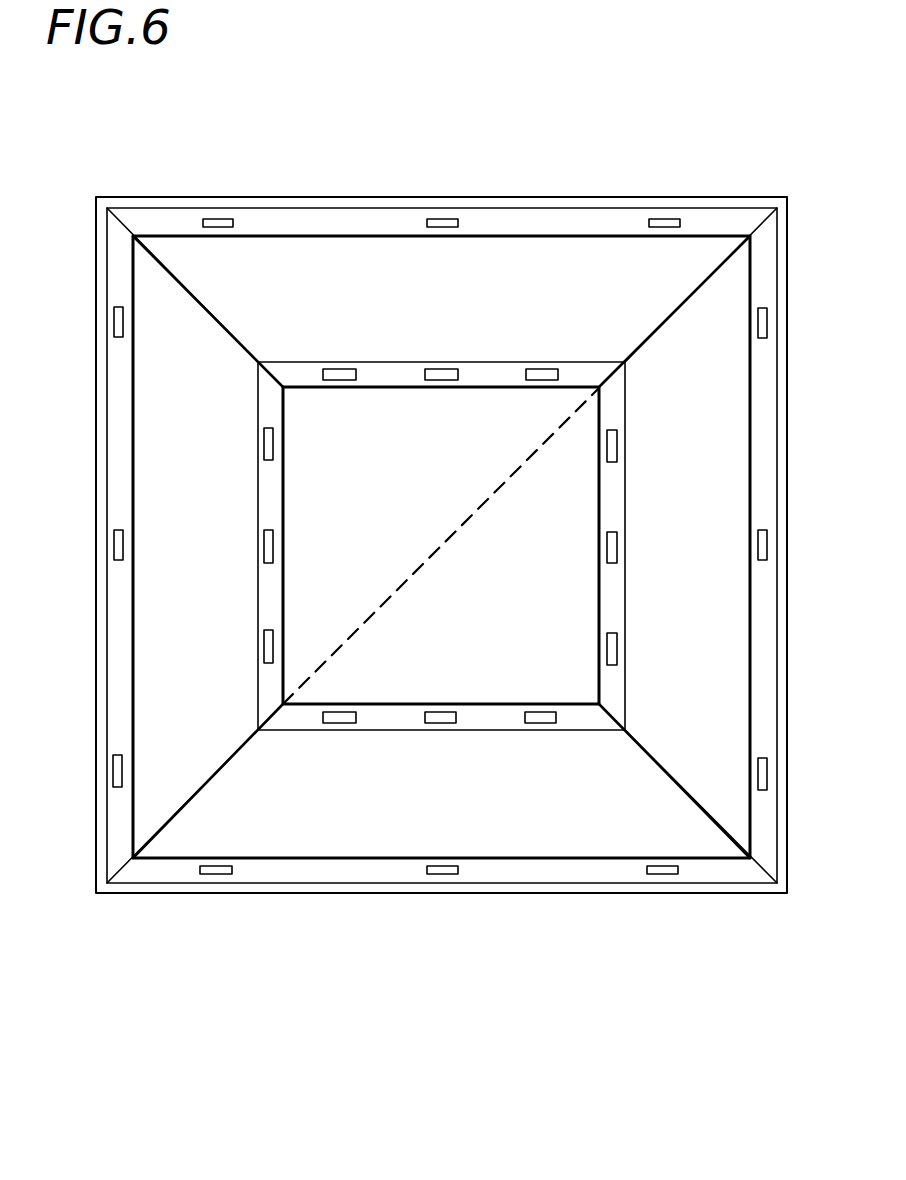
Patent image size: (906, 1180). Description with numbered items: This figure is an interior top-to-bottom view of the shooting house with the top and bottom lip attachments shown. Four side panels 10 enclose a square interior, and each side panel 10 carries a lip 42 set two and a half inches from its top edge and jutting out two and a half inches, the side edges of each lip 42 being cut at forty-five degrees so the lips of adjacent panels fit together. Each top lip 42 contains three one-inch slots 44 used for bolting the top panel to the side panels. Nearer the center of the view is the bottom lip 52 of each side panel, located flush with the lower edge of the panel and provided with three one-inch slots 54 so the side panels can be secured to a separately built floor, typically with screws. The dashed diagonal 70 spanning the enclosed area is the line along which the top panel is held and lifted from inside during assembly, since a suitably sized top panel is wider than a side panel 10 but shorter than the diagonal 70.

The side panel 10 is at (530, 270).
The lip 42 is at (718, 873).
The slots 44 is at (665, 875).
The bottom lip 52 is at (268, 478).
The slots 54 is at (275, 645).
The diagonal 70 is at (420, 572).